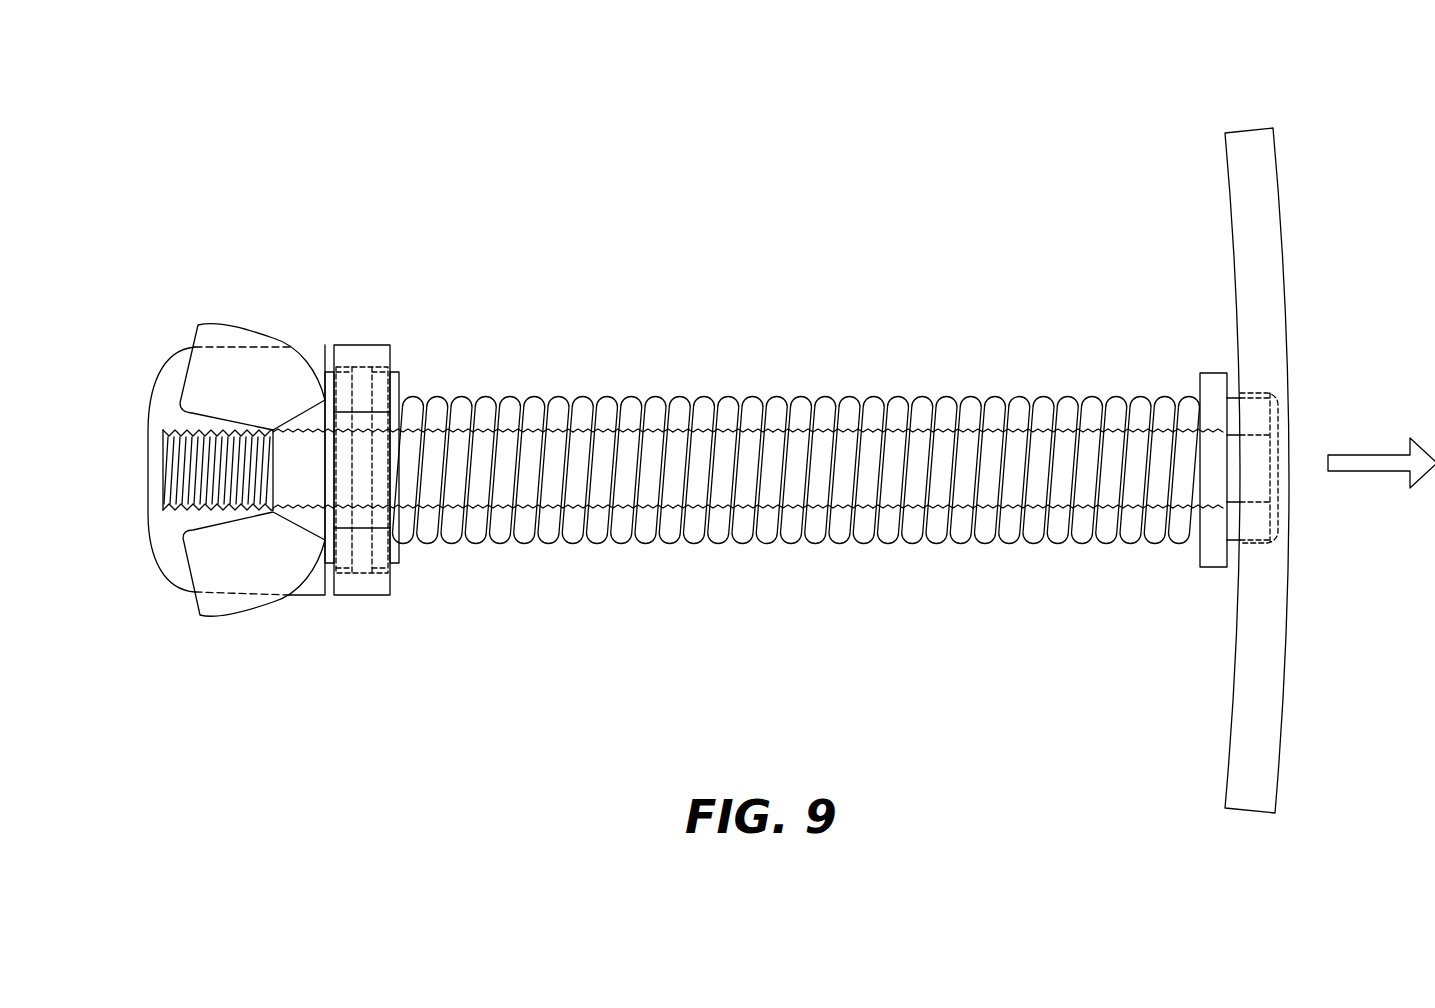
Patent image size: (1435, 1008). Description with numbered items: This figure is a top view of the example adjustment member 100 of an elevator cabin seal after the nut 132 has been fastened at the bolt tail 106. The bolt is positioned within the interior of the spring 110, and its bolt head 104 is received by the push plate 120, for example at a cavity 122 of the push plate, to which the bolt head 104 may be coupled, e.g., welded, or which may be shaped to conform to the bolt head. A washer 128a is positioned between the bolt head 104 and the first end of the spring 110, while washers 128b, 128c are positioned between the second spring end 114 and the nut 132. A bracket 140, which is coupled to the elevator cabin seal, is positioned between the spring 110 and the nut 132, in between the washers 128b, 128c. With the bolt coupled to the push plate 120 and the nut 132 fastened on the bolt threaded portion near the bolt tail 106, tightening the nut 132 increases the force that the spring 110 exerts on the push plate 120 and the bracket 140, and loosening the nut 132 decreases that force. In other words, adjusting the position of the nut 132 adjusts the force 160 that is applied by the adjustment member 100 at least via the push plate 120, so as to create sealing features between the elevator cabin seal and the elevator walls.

The adjustment member 100 is at (298, 160).
The bolt head 104 is at (1270, 528).
The bolt tail 106 is at (163, 463).
The spring 110 is at (582, 396).
The second spring end 114 is at (408, 545).
The push plate 120 is at (1282, 165).
The cavity 122 is at (1282, 393).
The washer 128a is at (1203, 373).
The washer 128b is at (400, 370).
The washer 128c is at (326, 370).
The nut 132 is at (222, 608).
The bracket 140 is at (368, 598).
The force 160 is at (1378, 476).